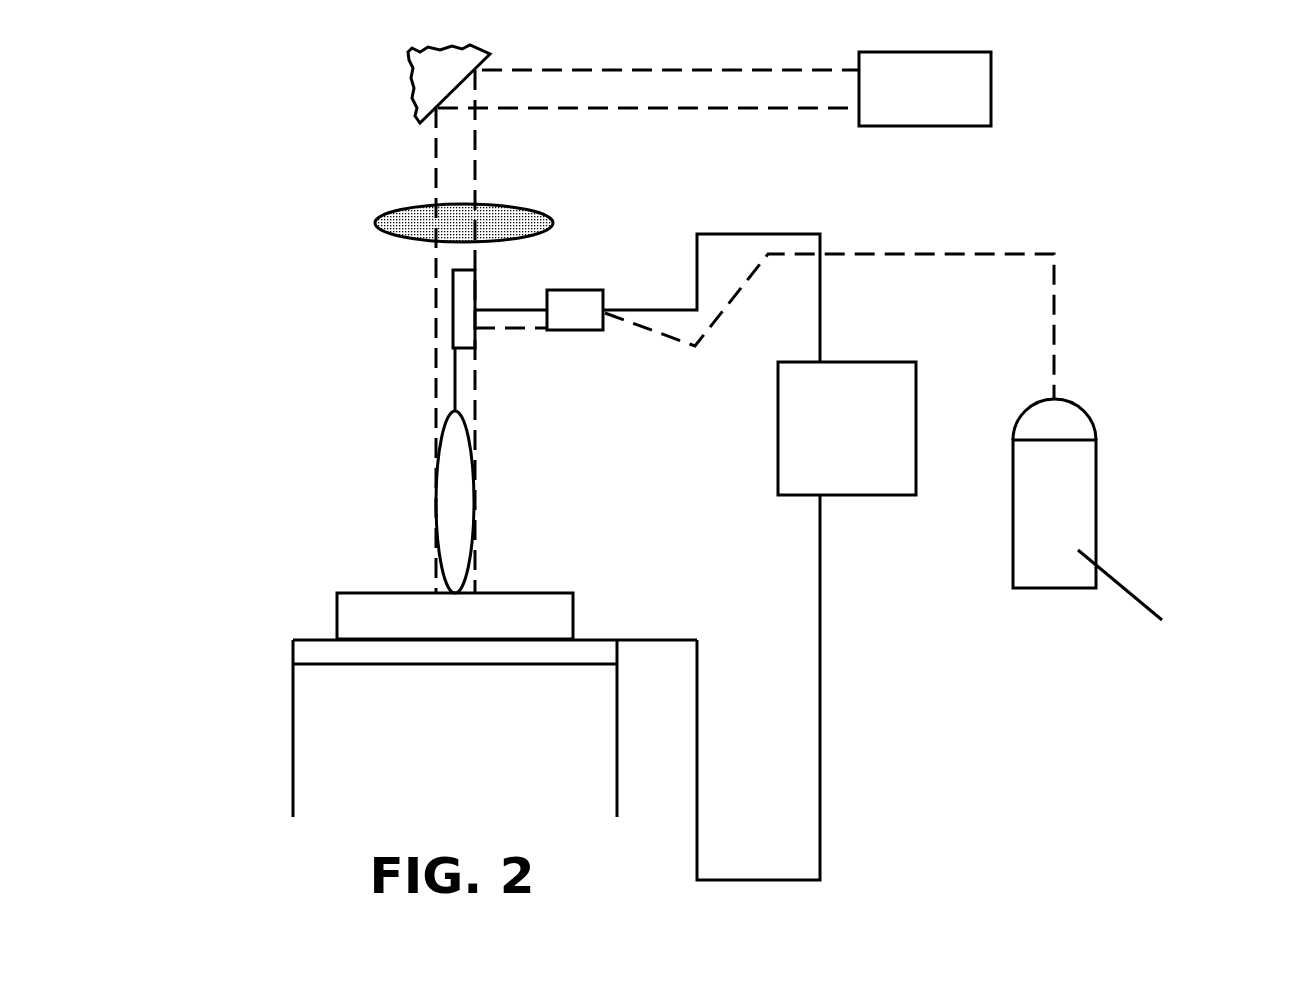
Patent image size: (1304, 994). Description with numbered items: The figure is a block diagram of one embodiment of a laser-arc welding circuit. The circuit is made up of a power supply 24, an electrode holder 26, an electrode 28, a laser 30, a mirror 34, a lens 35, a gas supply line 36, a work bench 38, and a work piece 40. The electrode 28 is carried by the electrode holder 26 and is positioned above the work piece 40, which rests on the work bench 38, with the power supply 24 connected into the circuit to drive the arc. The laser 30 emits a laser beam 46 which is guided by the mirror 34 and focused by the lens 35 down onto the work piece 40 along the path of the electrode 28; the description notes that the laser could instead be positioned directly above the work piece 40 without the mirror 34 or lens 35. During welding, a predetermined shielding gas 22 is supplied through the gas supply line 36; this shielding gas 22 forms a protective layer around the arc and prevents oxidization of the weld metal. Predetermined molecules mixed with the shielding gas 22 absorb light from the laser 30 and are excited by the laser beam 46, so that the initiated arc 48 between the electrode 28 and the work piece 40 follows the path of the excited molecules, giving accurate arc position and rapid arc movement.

The shielding gas 22 is at (410, 448).
The power supply 24 is at (889, 477).
The electrode holder 26 is at (453, 303).
The electrode 28 is at (451, 377).
The laser 30 is at (981, 98).
The mirror 34 is at (422, 83).
The lens 35 is at (400, 225).
The gas supply line 36 is at (1000, 247).
The work bench 38 is at (273, 733).
The work piece 40 is at (357, 622).
The laser beam 46 is at (663, 85).
The arc 48 is at (463, 521).